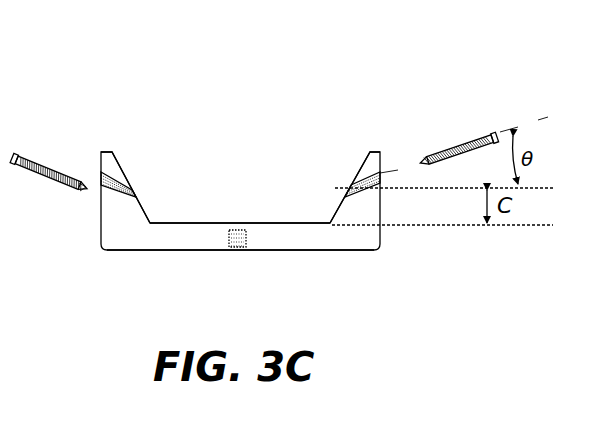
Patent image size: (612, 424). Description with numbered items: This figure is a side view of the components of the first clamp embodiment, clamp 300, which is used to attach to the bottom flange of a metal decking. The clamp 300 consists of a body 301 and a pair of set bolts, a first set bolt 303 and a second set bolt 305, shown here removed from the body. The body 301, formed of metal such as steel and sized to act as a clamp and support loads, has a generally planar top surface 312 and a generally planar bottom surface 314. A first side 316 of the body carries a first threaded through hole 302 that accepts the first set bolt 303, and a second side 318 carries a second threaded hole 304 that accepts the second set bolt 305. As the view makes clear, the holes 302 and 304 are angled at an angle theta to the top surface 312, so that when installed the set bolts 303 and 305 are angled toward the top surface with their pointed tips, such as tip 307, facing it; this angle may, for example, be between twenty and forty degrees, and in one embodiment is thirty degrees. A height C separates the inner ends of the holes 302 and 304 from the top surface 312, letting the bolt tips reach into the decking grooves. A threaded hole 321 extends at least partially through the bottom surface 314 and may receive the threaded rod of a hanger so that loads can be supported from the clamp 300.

The clamp 300 is at (233, 175).
The body 301 is at (230, 158).
The first threaded through hole 302 is at (137, 193).
The first set bolt 303 is at (67, 187).
The second threaded hole 304 is at (355, 182).
The second set bolt 305 is at (488, 132).
The tip 307 is at (83, 190).
The top surface 312 is at (268, 222).
The bottom surface 314 is at (310, 250).
The first side 316 is at (107, 140).
The second side 318 is at (370, 140).
The threaded hole 321 is at (235, 250).